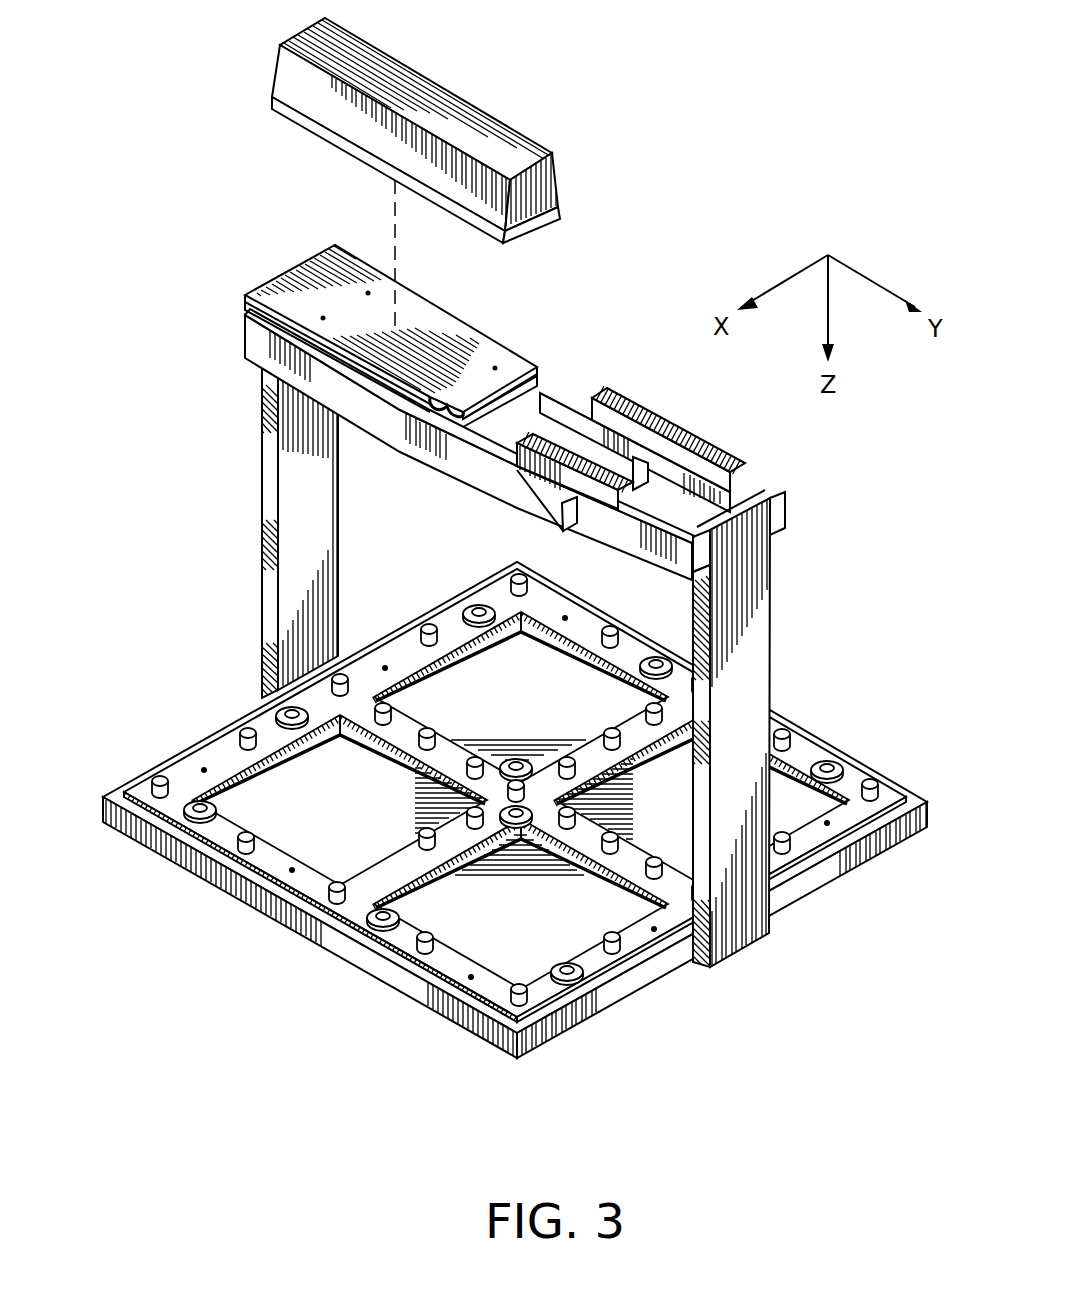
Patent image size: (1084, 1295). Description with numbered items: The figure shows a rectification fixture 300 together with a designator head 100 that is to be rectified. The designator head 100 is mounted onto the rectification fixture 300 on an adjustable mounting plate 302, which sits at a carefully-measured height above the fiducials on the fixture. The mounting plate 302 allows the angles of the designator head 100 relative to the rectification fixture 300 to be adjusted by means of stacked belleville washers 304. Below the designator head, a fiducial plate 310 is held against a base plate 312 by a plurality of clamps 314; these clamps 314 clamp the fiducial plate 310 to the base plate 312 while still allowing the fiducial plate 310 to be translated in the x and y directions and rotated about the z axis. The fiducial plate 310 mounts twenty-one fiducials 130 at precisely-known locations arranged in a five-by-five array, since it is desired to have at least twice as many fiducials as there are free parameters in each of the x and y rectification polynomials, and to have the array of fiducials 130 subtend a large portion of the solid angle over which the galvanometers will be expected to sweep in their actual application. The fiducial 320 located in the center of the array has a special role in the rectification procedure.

The designator head 100 is at (420, 72).
The fiducials 130 is at (523, 580).
The rectification fixture 300 is at (840, 525).
The adjustable mounting plate 302 is at (460, 309).
The stacked belleville washers 304 is at (523, 362).
The fiducial plate 310 is at (853, 780).
The base plate 312 is at (893, 840).
The clamps 314 is at (285, 712).
The center fiducial 320 is at (527, 776).